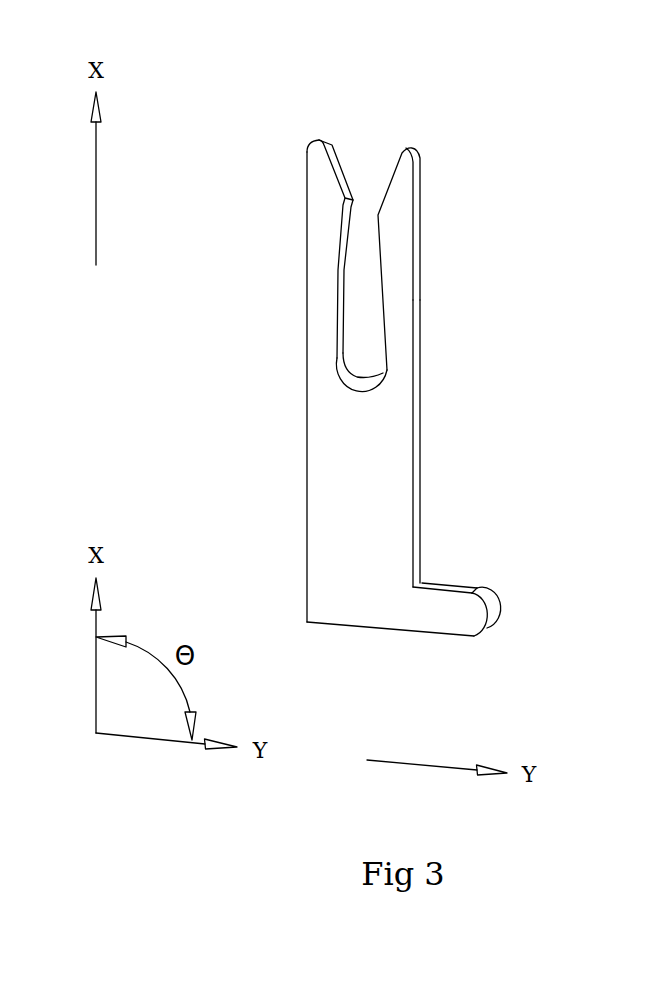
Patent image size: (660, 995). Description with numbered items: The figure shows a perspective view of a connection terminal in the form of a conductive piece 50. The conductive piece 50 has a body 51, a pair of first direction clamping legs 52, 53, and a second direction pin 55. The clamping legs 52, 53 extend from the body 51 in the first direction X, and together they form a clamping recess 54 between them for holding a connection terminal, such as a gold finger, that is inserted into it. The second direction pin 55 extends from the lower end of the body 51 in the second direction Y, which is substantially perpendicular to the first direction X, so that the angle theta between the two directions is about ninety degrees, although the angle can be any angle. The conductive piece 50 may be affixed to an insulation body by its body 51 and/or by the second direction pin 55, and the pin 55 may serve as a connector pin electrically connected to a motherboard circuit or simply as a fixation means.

The conductive piece 50 is at (409, 370).
The body 51 is at (417, 480).
The first direction clamping leg 52 is at (417, 300).
The first direction clamping leg 53 is at (315, 314).
The clamping recess 54 is at (362, 358).
The second direction pin 55 is at (493, 605).